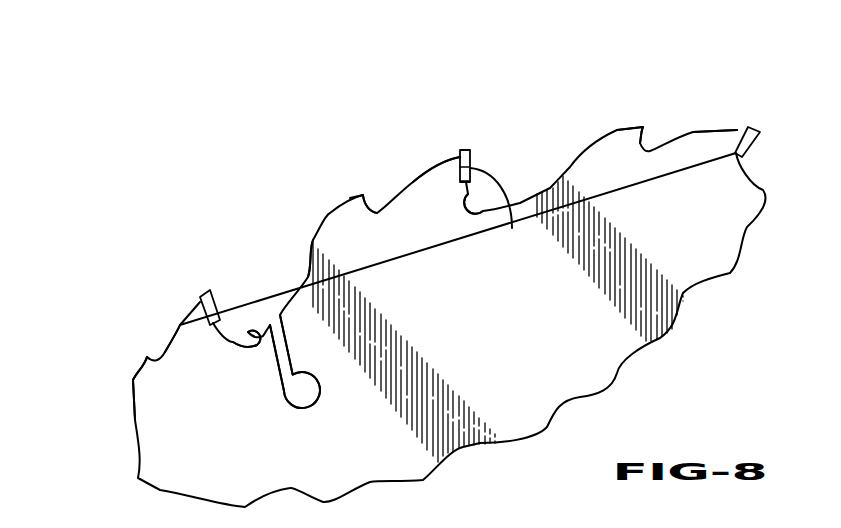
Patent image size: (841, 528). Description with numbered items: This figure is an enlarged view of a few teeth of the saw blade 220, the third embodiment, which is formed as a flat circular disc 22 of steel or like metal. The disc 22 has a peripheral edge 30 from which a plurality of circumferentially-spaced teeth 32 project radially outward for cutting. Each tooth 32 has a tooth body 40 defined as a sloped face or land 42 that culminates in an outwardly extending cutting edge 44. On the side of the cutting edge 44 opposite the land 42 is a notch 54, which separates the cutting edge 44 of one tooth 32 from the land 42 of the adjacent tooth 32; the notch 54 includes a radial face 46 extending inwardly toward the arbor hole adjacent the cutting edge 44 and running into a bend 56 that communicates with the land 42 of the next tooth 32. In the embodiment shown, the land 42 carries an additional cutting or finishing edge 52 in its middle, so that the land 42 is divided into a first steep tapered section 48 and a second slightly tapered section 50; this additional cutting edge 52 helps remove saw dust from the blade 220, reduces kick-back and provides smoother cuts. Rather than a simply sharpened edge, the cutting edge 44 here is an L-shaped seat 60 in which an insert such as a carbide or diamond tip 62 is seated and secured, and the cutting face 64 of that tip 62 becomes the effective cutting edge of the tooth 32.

The flat circular disc 22 is at (193, 438).
The saw blade 220 is at (250, 203).
The peripheral edge 30 is at (267, 280).
The tooth 32 is at (143, 298).
The tooth body 40 is at (393, 198).
The land 42 is at (423, 185).
The cutting edge 44 is at (460, 152).
The radial face 46 is at (477, 213).
The first steep tapered section 48 is at (308, 260).
The second slightly tapered section 50 is at (440, 157).
The additional cutting edge 52 is at (363, 195).
The notch 54 is at (263, 324).
The bend 56 is at (263, 347).
The L-shaped seat 60 is at (498, 212).
The carbide or diamond tip 62 is at (466, 150).
The cutting face 64 is at (470, 163).